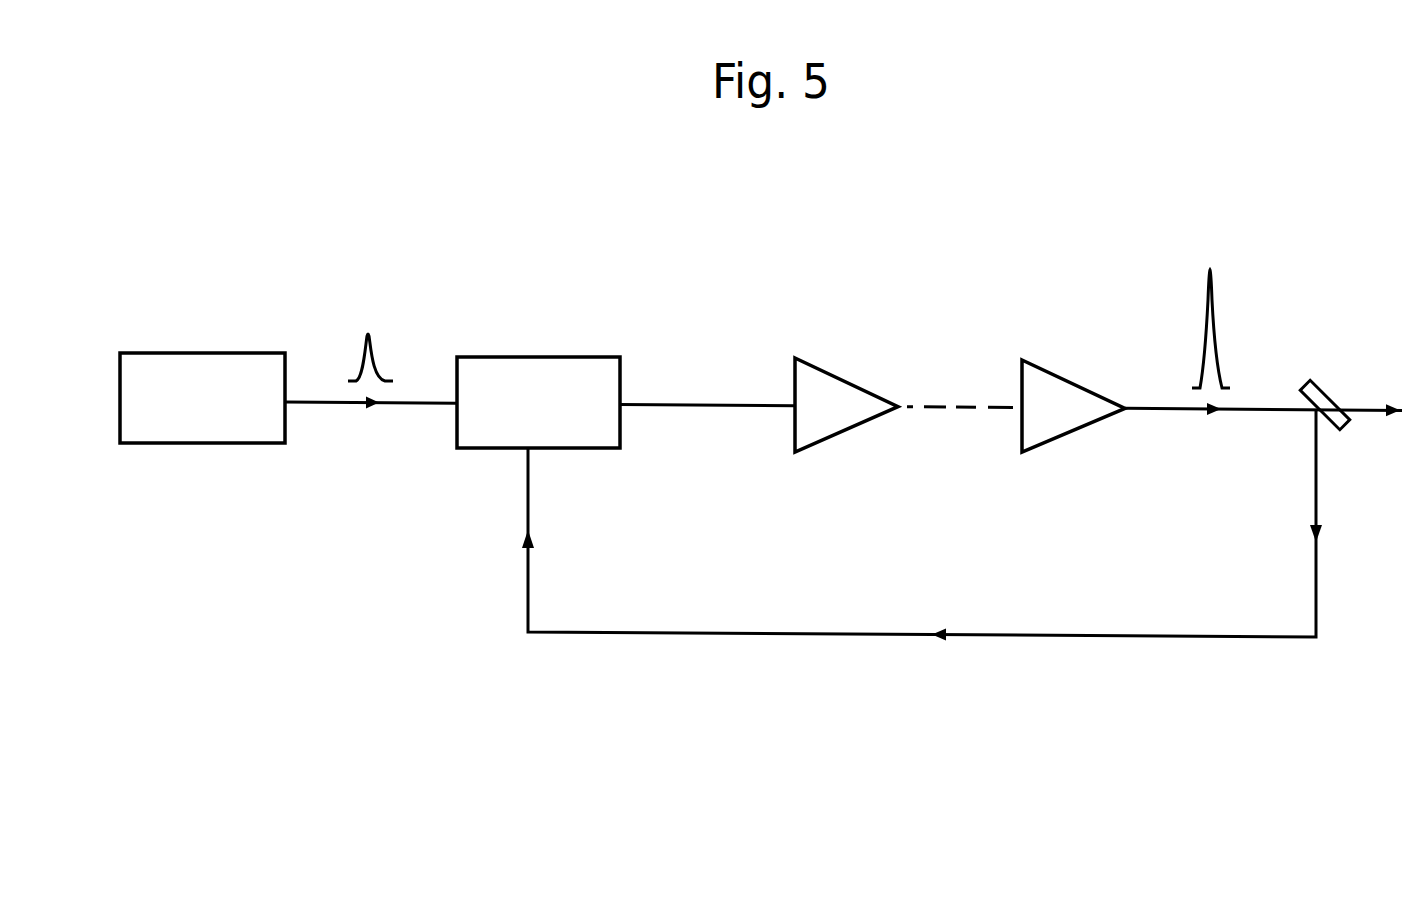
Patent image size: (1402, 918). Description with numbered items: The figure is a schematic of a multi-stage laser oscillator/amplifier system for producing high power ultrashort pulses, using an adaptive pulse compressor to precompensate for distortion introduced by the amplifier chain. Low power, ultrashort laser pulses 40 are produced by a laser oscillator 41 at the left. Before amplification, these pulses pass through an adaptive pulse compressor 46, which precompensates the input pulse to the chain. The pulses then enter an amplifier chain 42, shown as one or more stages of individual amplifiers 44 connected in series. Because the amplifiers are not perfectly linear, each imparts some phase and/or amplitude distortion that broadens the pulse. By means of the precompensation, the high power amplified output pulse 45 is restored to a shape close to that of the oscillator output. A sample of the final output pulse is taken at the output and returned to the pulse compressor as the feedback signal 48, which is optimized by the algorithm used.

The laser pulses 40 is at (373, 332).
The laser oscillator 41 is at (190, 347).
The amplifier chain 42 is at (1132, 357).
The amplifiers 44 is at (830, 440).
The amplified output pulse 45 is at (1222, 298).
The adaptive pulse compressor 46 is at (558, 347).
The feedback signal 48 is at (867, 640).